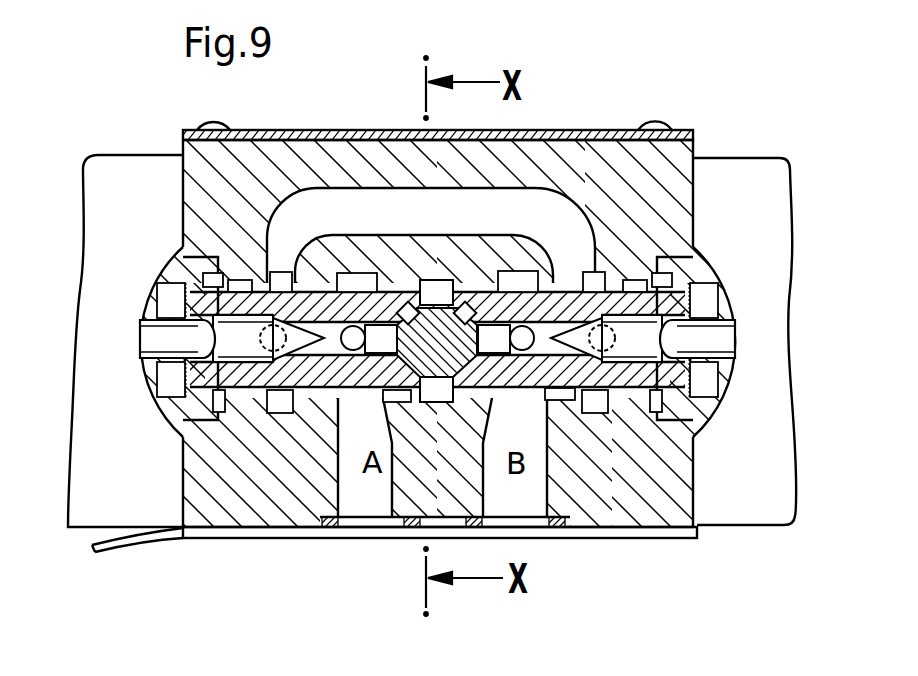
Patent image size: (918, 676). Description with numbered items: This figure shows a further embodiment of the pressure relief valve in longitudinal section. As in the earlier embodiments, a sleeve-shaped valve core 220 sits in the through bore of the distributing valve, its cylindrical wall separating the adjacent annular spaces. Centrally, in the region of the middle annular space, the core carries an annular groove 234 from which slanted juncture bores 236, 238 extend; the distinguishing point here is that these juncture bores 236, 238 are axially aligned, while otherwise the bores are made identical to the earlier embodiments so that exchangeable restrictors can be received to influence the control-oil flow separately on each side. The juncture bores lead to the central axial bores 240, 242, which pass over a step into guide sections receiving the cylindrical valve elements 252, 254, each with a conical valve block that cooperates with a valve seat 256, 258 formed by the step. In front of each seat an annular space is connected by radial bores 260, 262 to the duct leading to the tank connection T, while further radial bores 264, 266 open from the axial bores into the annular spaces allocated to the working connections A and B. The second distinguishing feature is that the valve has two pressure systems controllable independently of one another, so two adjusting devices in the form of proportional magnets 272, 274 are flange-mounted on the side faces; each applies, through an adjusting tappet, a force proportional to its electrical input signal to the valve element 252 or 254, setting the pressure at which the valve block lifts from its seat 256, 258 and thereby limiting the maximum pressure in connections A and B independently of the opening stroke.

The valve housing sleeve 220 is at (344, 380).
The annular groove 234 is at (438, 403).
The juncture bore 236 is at (407, 306).
The juncture bore 238 is at (468, 302).
The first check ball 240 is at (351, 348).
The sleeve land 242 is at (560, 400).
The left plunger 252 is at (222, 350).
The right plunger 254 is at (648, 360).
The left sleeve land 256 is at (314, 284).
The right sleeve land 258 is at (562, 282).
The left seal land 260 is at (273, 280).
The right lower land 262 is at (602, 414).
The left lower land 264 is at (384, 402).
The second check ball 266 is at (524, 348).
The left mounting block 272 is at (110, 407).
The right mounting block 274 is at (747, 202).